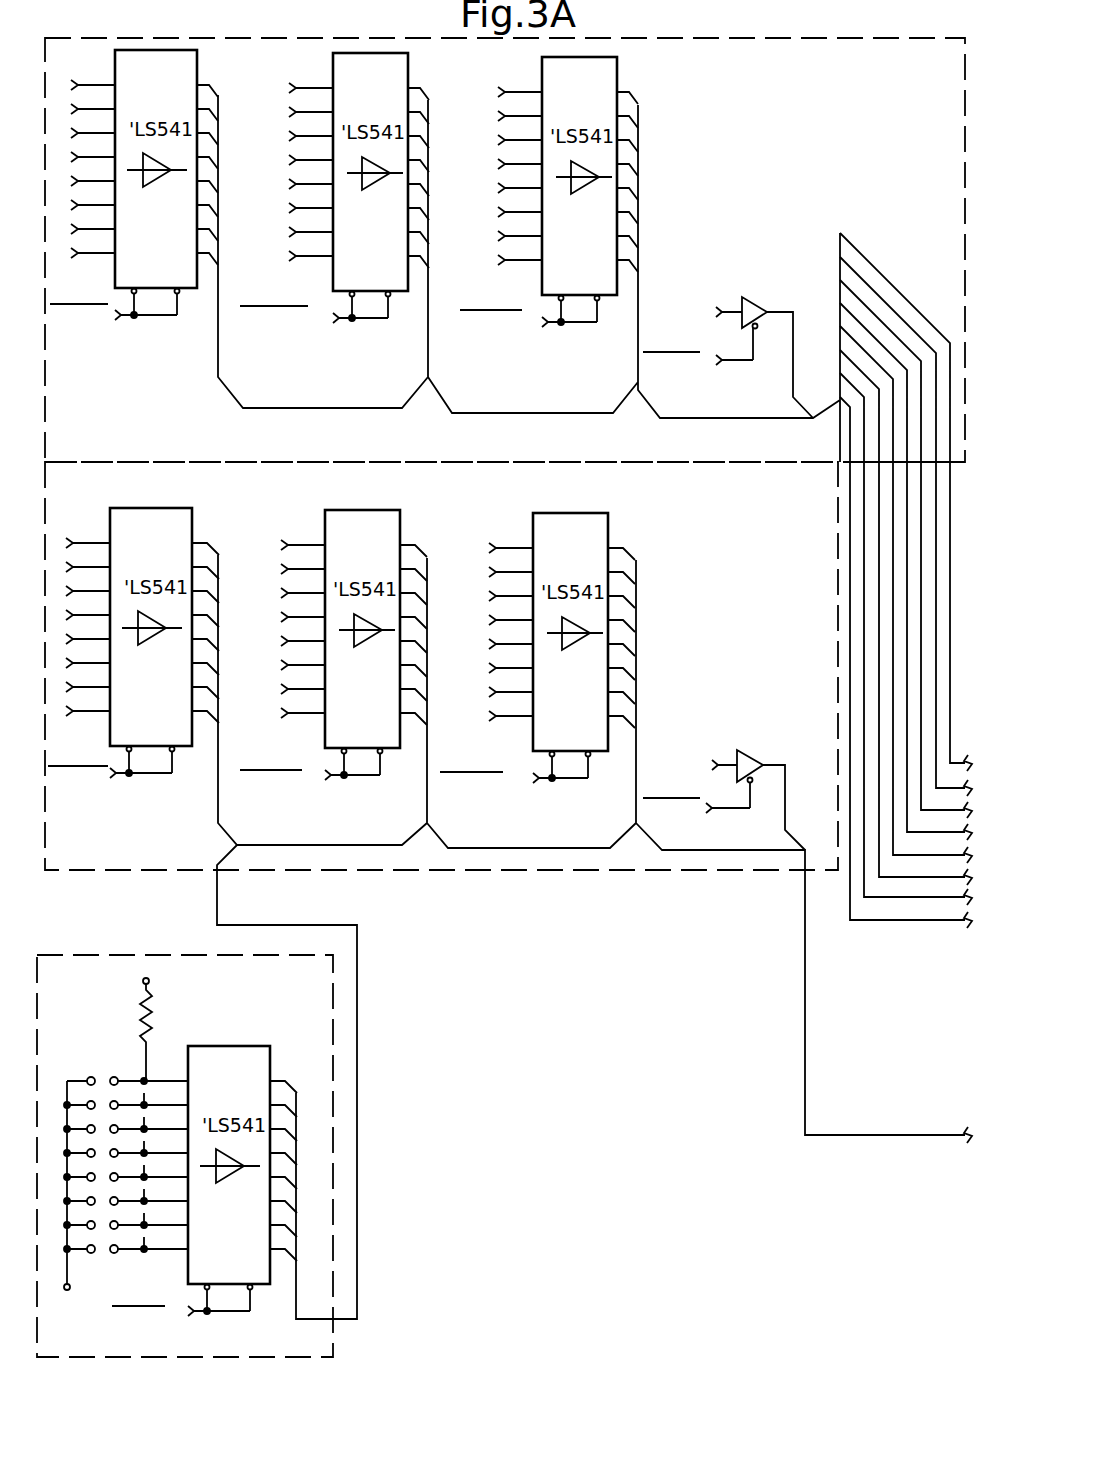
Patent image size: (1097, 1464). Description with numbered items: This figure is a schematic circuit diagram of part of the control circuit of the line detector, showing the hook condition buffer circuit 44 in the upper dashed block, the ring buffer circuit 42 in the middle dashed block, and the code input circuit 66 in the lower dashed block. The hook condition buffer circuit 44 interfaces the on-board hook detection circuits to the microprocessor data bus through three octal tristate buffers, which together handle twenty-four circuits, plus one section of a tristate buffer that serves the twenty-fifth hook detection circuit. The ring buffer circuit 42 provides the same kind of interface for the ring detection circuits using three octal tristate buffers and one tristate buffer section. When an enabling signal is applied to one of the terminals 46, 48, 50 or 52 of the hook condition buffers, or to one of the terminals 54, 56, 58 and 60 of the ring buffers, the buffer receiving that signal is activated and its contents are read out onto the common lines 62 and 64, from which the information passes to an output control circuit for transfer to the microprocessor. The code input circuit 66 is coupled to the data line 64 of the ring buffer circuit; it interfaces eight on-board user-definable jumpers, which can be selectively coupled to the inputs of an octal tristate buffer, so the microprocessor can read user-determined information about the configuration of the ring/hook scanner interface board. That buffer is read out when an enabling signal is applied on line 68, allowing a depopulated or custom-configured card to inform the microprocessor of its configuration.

The ring buffer circuit 42 is at (646, 495).
The hook condition buffer circuit 44 is at (642, 445).
The terminal 46 is at (122, 314).
The terminal 48 is at (340, 318).
The terminal 50 is at (548, 322).
The terminal 52 is at (735, 362).
The terminal 54 is at (112, 777).
The terminal 56 is at (332, 782).
The terminal 58 is at (536, 784).
The terminal 60 is at (730, 809).
The common line 62 is at (526, 413).
The common line 64 is at (510, 848).
The code input circuit 66 is at (185, 1137).
The line 68 is at (195, 1320).